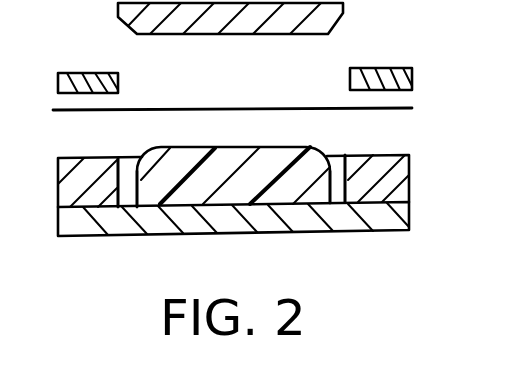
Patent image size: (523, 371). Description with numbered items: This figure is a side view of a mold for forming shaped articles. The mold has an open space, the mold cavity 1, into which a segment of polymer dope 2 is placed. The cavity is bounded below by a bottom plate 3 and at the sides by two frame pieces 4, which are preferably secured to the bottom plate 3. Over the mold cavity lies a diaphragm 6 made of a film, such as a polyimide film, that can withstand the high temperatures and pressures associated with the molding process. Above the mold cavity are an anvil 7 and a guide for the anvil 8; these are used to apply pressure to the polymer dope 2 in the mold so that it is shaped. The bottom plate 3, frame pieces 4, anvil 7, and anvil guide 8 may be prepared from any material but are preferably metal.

The mold cavity 1 is at (130, 193).
The segment of polymer dope 2 is at (288, 168).
The bottom plate 3 is at (127, 225).
The frame pieces 4 is at (93, 181).
The diaphragm 6 is at (125, 112).
The anvil 7 is at (152, 17).
The guide for the anvil 8 is at (118, 77).